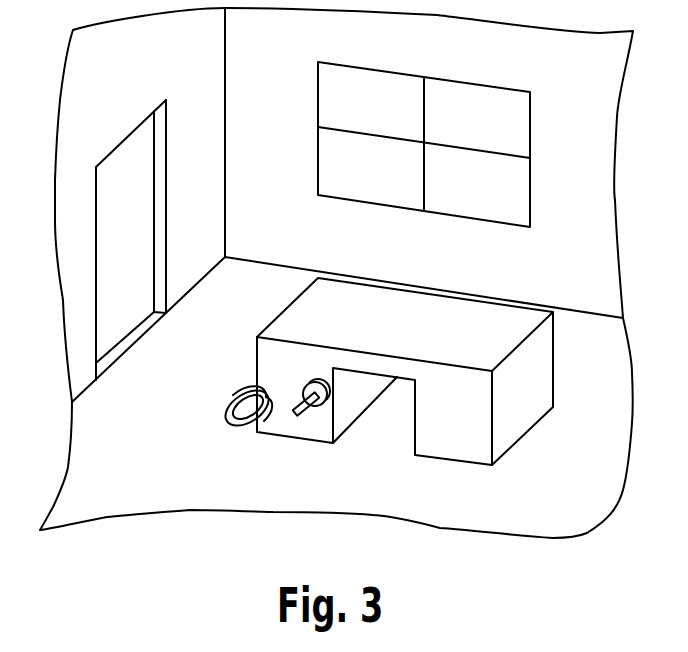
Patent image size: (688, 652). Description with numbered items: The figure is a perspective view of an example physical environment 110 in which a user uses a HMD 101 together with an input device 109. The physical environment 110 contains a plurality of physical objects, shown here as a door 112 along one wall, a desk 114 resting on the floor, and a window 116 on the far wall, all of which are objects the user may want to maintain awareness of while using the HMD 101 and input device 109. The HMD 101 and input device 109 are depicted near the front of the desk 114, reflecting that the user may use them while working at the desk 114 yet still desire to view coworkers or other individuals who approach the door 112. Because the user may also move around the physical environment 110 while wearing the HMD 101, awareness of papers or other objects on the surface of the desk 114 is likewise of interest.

The HMD 101 is at (228, 402).
The input device 109 is at (307, 409).
The physical environment 110 is at (567, 505).
The door 112 is at (118, 172).
The desk 114 is at (307, 307).
The window 116 is at (348, 63).